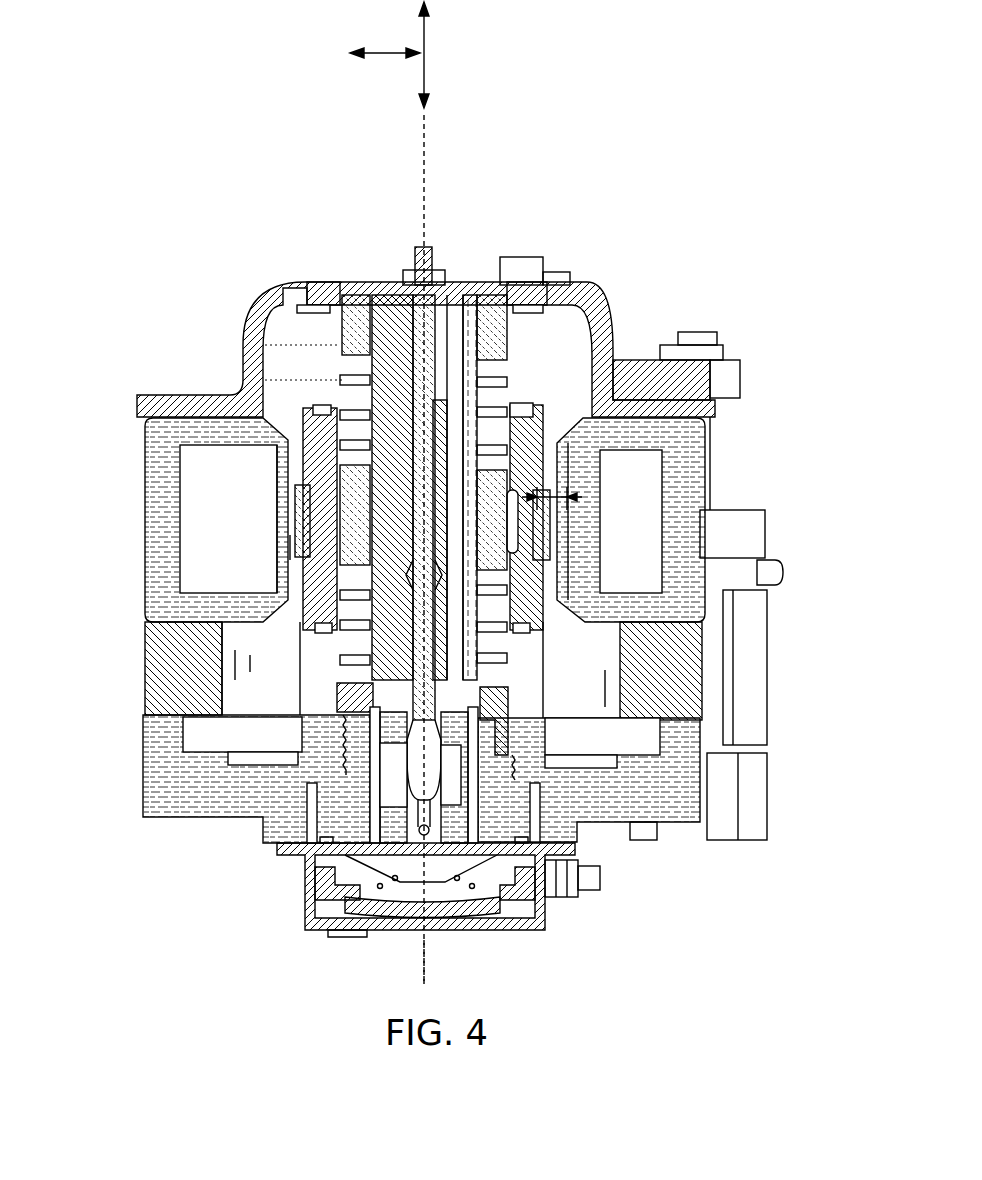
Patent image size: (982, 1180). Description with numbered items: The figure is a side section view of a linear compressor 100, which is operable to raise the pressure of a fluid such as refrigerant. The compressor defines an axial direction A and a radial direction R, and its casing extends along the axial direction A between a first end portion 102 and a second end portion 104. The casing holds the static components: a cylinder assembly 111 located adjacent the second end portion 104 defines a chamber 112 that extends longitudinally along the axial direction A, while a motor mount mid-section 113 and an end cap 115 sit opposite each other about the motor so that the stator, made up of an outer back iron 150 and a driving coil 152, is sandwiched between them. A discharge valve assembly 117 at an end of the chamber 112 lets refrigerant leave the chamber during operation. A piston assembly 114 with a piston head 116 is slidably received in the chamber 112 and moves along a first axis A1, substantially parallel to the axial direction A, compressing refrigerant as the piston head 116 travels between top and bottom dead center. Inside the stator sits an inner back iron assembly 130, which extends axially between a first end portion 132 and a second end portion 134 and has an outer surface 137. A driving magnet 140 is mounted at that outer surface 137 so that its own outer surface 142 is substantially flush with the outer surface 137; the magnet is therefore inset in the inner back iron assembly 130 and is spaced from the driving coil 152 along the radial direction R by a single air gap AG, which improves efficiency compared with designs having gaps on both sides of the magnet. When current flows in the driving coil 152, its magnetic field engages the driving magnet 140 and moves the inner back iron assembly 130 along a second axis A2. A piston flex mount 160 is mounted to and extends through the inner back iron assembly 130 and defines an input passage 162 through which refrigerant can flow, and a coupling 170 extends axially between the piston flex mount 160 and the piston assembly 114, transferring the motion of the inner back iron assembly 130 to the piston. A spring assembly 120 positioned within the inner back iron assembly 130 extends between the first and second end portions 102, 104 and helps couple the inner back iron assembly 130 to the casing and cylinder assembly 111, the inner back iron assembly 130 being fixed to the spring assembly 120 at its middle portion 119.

The linear compressor 100 is at (775, 232).
The first end portion 102 is at (740, 346).
The second end portion 104 is at (778, 836).
The cylinder assembly 111 is at (605, 790).
The chamber 112 is at (398, 848).
The motor mount mid-section 113 is at (693, 675).
The piston assembly 114 is at (372, 795).
The end cap 115 is at (600, 325).
The piston head 116 is at (458, 820).
The discharge valve assembly 117 is at (305, 890).
The middle portion 119 is at (502, 497).
The spring assembly 120 is at (292, 540).
The inner back iron assembly 130 is at (312, 590).
The first end portion 132 is at (546, 405).
The second end portion 134 is at (543, 622).
The outer surface 137 is at (300, 468).
The driving magnet 140 is at (300, 500).
The outer surface 142 is at (283, 552).
The outer back iron 150 is at (147, 485).
The driving coil 152 is at (220, 520).
The piston flex mount 160 is at (395, 290).
The input passage 162 is at (458, 357).
The coupling 170 is at (452, 346).
The axial direction A is at (424, 48).
The radial direction R is at (394, 58).
The first axis A1 is at (430, 978).
The second axis A2 is at (428, 152).
The air gap AG is at (569, 501).